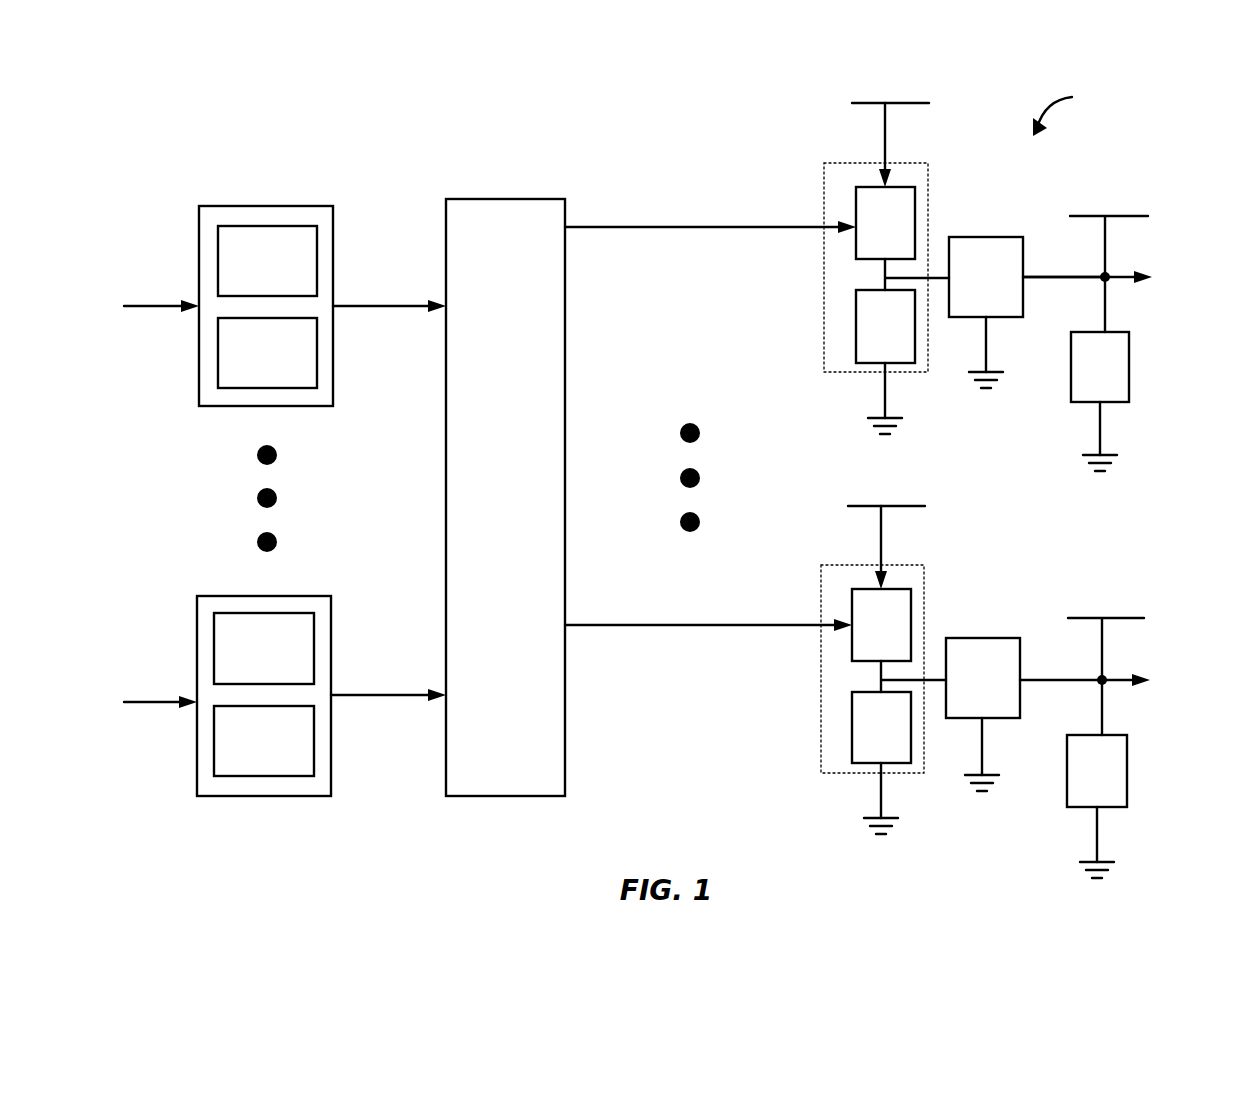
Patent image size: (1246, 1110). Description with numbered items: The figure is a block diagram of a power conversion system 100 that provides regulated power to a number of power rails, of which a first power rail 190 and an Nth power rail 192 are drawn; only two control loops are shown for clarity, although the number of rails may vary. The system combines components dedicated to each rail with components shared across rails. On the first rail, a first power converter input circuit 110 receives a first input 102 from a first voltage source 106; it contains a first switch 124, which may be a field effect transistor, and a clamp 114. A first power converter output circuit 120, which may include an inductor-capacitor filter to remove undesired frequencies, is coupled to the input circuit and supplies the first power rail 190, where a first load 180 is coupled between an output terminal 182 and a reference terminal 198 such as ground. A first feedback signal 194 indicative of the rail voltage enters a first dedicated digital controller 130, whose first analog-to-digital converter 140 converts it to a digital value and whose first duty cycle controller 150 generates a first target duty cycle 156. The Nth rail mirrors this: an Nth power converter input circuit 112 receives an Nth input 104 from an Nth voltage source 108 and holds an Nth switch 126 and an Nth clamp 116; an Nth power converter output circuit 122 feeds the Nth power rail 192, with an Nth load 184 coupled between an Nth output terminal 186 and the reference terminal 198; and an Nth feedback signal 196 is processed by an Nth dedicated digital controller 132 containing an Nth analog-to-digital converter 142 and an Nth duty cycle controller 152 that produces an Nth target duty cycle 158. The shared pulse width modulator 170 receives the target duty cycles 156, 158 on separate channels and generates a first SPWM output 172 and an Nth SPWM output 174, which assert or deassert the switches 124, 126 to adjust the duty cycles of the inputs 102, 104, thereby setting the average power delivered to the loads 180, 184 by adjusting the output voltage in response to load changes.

The power conversion system 100 is at (1121, 115).
The first input 102 is at (886, 156).
The Nth input 104 is at (882, 556).
The first voltage source 106 is at (896, 103).
The Nth voltage source 108 is at (892, 506).
The first power converter input circuit 110 is at (836, 163).
The Nth power converter input circuit 112 is at (833, 565).
The clamp 114 is at (902, 346).
The Nth clamp 116 is at (899, 747).
The first power converter output circuit 120 is at (986, 312).
The Nth power converter output circuit 122 is at (983, 714).
The first switch 124 is at (885, 223).
The Nth switch 126 is at (881, 625).
The first dedicated digital controller 130 is at (298, 205).
The Nth dedicated digital controller 132 is at (243, 596).
The first analog-to-digital converter 140 is at (267, 261).
The Nth analog-to-digital converter 142 is at (264, 648).
The first duty cycle controller 150 is at (267, 353).
The Nth duty cycle controller 152 is at (264, 741).
The first target duty cycle 156 is at (402, 306).
The Nth target duty cycle 158 is at (395, 695).
The shared pulse width modulator 170 is at (505, 497).
The first SPWM output 172 is at (700, 227).
The Nth SPWM output 174 is at (750, 625).
The first load 180 is at (1100, 393).
The output terminal 182 is at (1102, 273).
The Nth load 184 is at (1097, 806).
The Nth output terminal 186 is at (1100, 677).
The first power rail 190 is at (1127, 216).
The Nth power rail 192 is at (1127, 618).
The first feedback signal 194 is at (158, 305).
The Nth feedback signal 196 is at (160, 702).
The reference terminal 198 is at (1098, 435).